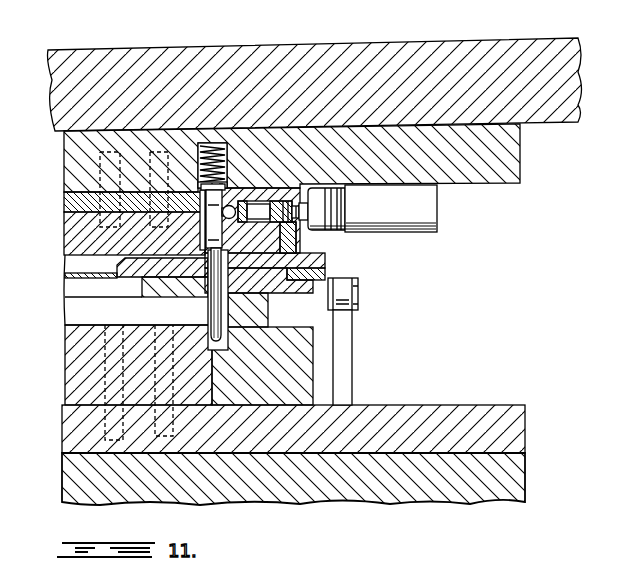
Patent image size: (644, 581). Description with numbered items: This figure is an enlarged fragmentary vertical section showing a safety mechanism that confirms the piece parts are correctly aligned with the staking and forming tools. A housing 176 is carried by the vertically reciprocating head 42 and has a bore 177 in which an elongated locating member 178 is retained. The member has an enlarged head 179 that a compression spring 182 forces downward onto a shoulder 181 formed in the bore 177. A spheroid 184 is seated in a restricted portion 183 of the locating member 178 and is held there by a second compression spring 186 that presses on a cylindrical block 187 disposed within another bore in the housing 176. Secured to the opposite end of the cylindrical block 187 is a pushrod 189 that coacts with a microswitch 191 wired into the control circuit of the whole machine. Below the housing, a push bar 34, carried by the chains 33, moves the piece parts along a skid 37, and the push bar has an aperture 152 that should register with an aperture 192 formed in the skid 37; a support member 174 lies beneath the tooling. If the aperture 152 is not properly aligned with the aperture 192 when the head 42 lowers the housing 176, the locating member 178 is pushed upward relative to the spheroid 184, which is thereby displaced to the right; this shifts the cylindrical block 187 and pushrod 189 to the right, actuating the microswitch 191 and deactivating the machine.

The chains 33 is at (358, 291).
The push bar 34 is at (312, 262).
The skid 37 is at (135, 292).
The head 42 is at (590, 39).
The aperture 152 is at (142, 280).
The support member 174 is at (466, 402).
The housing 176 is at (498, 160).
The bore 177 is at (202, 227).
The locating member 178 is at (217, 316).
The enlarged head 179 is at (203, 225).
The shoulder 181 is at (255, 199).
The compression spring 182 is at (227, 184).
The restricted portion 183 is at (200, 203).
The spheroid 184 is at (275, 288).
The compression spring 186 is at (300, 228).
The cylindrical block 187 is at (281, 200).
The pushrod 189 is at (297, 204).
The microswitch 191 is at (422, 213).
The aperture 192 is at (203, 293).